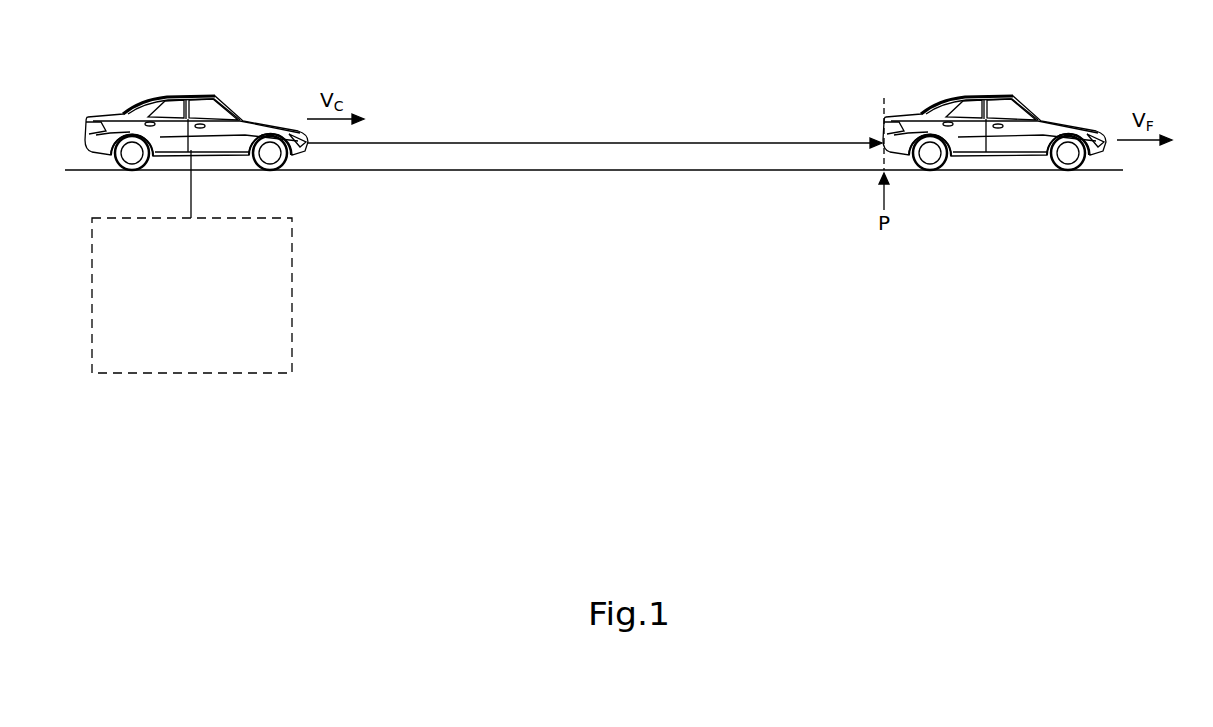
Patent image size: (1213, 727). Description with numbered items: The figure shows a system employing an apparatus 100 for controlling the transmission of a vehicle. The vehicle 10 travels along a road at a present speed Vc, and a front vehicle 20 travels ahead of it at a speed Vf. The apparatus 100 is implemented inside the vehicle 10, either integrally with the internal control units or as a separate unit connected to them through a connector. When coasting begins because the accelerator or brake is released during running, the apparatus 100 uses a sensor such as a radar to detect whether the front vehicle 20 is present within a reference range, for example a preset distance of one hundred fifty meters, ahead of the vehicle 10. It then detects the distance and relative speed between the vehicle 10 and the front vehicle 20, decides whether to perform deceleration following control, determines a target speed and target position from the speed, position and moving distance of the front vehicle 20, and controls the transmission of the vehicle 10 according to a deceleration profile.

The vehicle 10 is at (182, 96).
The front vehicle 20 is at (980, 96).
The apparatus for controlling transmission of vehicle 100 is at (292, 296).